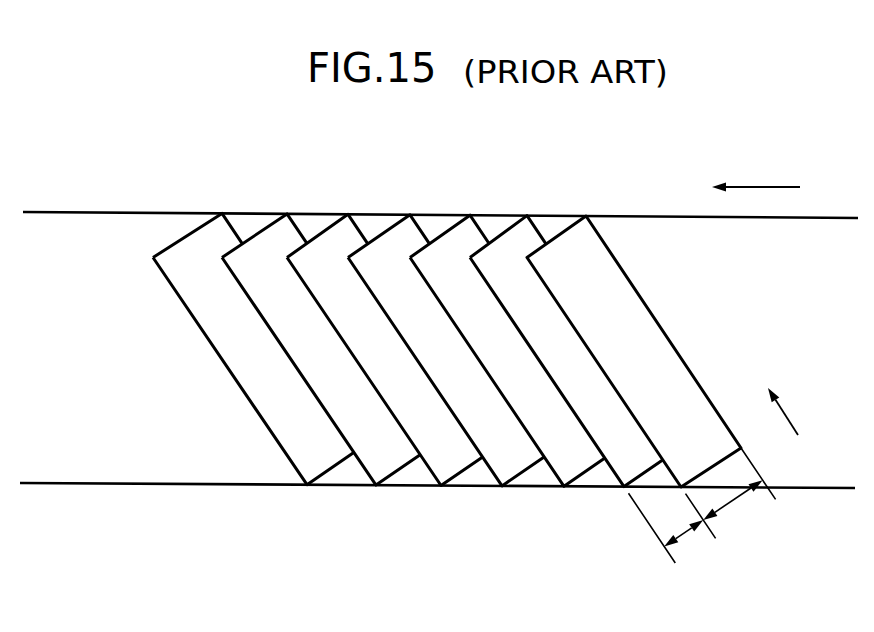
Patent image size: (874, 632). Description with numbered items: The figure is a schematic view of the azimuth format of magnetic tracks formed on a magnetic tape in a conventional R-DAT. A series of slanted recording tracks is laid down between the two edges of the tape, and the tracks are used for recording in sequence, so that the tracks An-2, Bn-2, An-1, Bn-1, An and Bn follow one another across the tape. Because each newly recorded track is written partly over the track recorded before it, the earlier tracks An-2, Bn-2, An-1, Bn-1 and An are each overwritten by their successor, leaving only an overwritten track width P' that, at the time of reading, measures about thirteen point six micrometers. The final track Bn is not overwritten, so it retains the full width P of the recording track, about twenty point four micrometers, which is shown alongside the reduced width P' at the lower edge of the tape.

The recording track An-2 is at (321, 349).
The recording track Bn-2 is at (384, 349).
The recording track An-1 is at (446, 350).
The recording track Bn-1 is at (507, 350).
The recording track An is at (566, 351).
The recording track Bn is at (634, 351).
The width of recording track which is not overwritten P is at (732, 512).
The overwritten track width P' is at (687, 544).